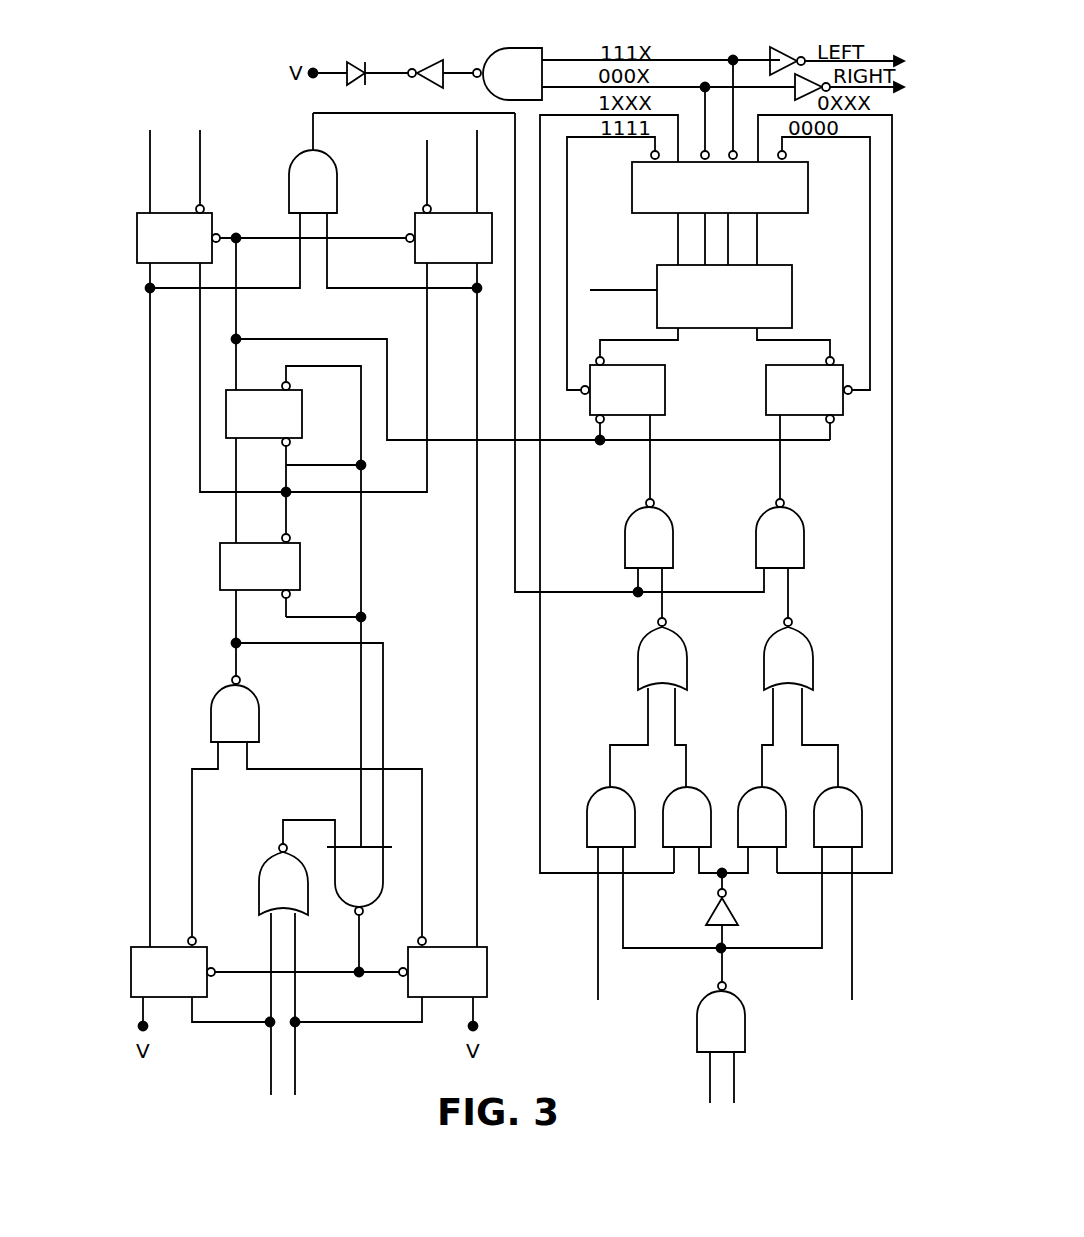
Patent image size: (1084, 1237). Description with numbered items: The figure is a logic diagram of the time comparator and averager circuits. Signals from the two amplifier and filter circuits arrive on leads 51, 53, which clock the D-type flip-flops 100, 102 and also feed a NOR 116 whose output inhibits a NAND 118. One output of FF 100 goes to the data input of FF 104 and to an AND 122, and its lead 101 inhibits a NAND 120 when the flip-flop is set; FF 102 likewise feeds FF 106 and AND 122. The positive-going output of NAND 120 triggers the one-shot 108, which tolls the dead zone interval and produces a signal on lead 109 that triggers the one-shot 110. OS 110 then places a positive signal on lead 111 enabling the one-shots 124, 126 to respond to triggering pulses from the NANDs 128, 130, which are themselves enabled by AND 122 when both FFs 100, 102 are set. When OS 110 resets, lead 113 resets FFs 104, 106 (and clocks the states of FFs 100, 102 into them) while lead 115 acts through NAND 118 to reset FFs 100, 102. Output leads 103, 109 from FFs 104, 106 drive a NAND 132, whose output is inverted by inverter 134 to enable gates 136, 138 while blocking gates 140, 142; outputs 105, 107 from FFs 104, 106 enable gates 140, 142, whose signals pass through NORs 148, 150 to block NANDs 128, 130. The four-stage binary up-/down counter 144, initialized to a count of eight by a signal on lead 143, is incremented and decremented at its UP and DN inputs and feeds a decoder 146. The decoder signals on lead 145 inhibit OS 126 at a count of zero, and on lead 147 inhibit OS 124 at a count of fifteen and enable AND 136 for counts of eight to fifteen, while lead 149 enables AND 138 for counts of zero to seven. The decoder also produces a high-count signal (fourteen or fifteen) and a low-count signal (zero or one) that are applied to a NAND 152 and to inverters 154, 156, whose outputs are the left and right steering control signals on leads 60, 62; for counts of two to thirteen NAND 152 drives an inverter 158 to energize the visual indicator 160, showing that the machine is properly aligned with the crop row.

The lead 51 is at (270, 1057).
The lead 53 is at (296, 1057).
The lead 60 is at (883, 57).
The lead 62 is at (879, 98).
The D-type flip-flop 100 is at (200, 942).
The lead 101 is at (192, 791).
The D-type flip-flop 102 is at (487, 945).
The output lead 103 is at (150, 160).
The D-type flip-flop 104 is at (213, 212).
The output 105 is at (200, 167).
The D-type flip-flop 106 is at (412, 210).
The output 107 is at (427, 167).
The one-shot multivibrator 108 is at (300, 545).
The lead 109 is at (477, 163).
The one-shot multivibrator 110 is at (302, 390).
The lead 111 is at (298, 337).
The lead 113 is at (236, 307).
The lead 115 is at (361, 571).
The NOR 116 is at (263, 873).
The NAND 118 is at (383, 870).
The NAND 120 is at (248, 687).
The AND 122 is at (330, 157).
The one-shot multivibrator 124 is at (667, 375).
The one-shot multivibrator 126 is at (765, 401).
The NAND 128 is at (667, 510).
The NAND 130 is at (797, 510).
The NAND 132 is at (747, 1025).
The inverter 134 is at (733, 913).
The NAND 136 is at (670, 793).
The NAND 138 is at (745, 793).
The NAND 140 is at (595, 793).
The NAND 142 is at (822, 793).
The lead 143 is at (612, 289).
The up-/down counter 144 is at (792, 267).
The lead 145 is at (870, 293).
The decoder 146 is at (810, 188).
The lead 147 is at (540, 487).
The NOR 148 is at (675, 633).
The lead 149 is at (892, 543).
The NOR 150 is at (802, 635).
The NAND 152 is at (512, 37).
The inverter 154 is at (788, 48).
The inverter 156 is at (785, 94).
The inverter 158 is at (430, 60).
The visual indicator 160 is at (352, 60).